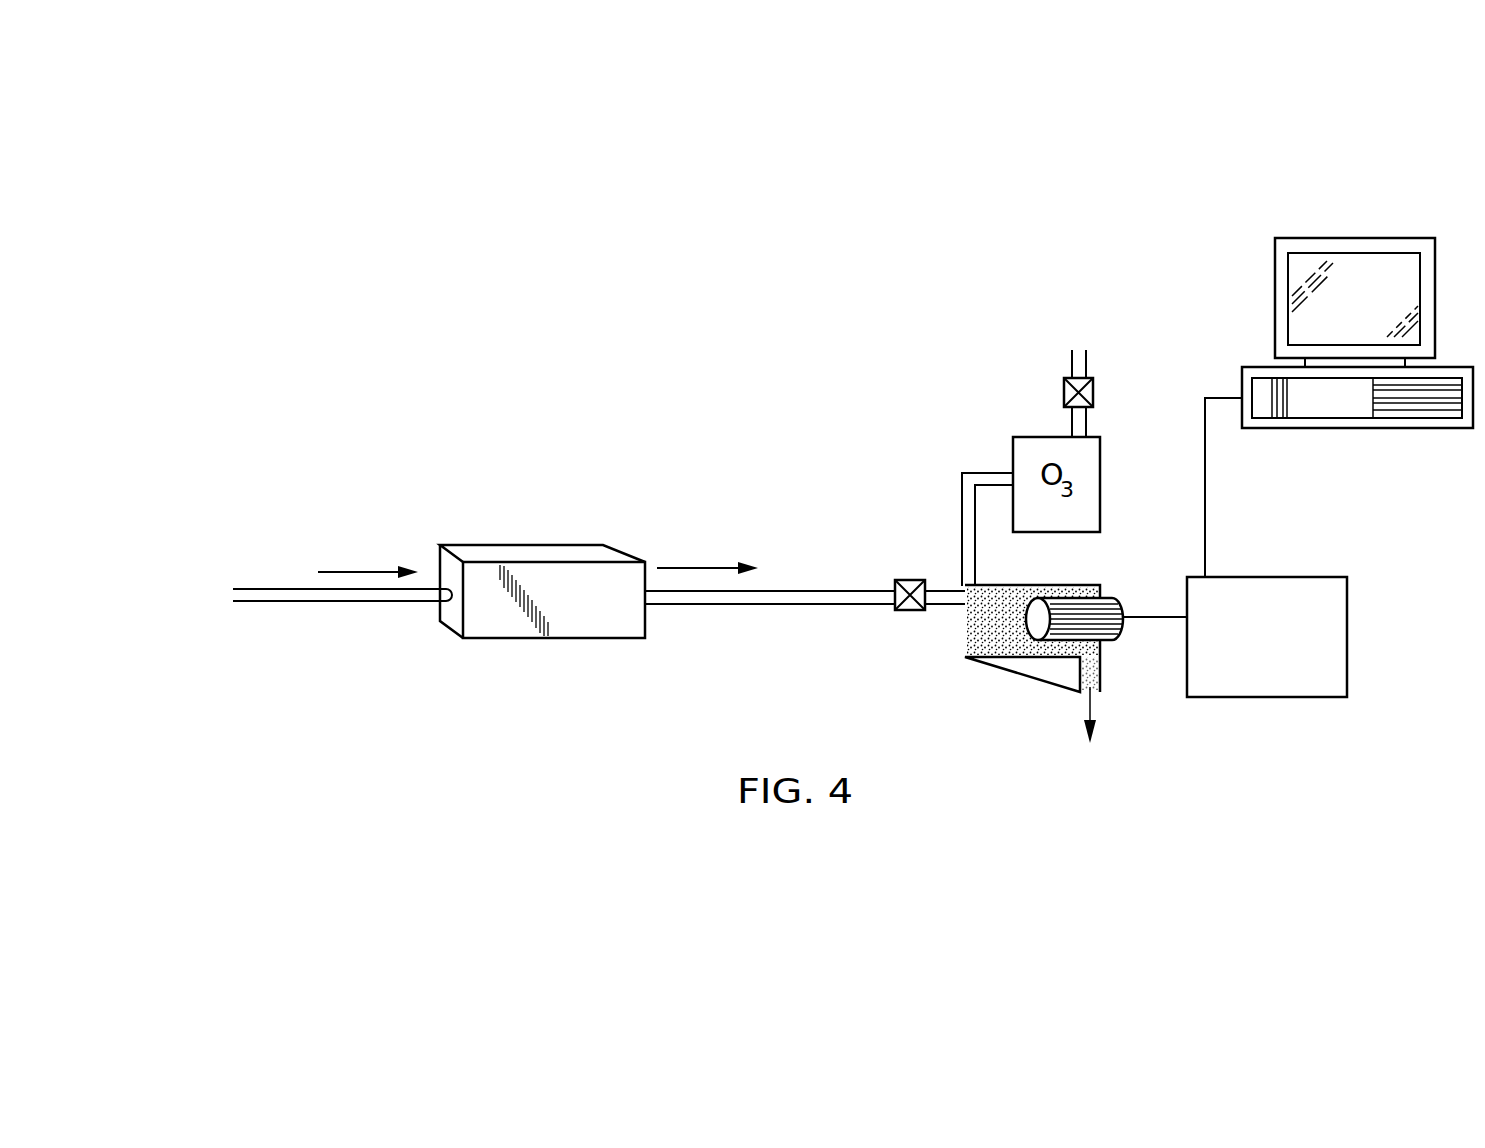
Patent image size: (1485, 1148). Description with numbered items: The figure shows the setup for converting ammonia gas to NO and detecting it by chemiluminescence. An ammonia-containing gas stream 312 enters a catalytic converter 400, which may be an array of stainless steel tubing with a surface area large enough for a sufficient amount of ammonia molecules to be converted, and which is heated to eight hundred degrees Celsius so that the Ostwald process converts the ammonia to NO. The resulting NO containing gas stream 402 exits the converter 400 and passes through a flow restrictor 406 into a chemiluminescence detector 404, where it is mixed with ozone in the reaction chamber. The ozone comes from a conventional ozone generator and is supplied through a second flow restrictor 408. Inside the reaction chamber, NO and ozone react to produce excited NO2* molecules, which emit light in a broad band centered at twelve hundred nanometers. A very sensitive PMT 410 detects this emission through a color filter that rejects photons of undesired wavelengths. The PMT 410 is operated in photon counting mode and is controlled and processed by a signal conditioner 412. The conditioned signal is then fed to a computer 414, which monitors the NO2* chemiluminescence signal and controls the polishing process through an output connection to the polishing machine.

The ammonia-containing gas stream 312 is at (352, 571).
The catalytic converter 400 is at (530, 552).
The NO containing gas stream 402 is at (692, 568).
The chemiluminescence detector 404 is at (990, 656).
The flow restrictor 406 is at (908, 580).
The flow restrictor 408 is at (1064, 390).
The PMT 410 is at (1118, 596).
The signal conditioner 412 is at (1294, 644).
The computer 414 is at (1365, 428).